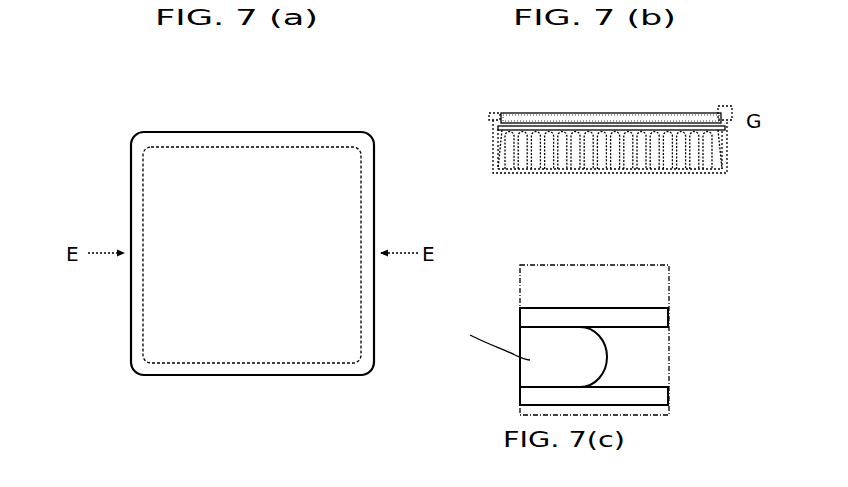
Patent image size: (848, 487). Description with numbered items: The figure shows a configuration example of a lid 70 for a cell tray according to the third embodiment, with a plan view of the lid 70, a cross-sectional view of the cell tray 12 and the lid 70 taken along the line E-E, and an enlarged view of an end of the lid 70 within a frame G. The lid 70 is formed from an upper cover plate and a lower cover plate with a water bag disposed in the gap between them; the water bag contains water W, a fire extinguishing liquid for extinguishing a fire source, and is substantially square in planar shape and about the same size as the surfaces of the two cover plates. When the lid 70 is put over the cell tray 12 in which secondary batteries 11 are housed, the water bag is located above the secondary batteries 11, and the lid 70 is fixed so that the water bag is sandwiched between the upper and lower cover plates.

The lid for a cell tray 70 is at (127, 62).
The cell tray 12 is at (743, 153).
The secondary batteries 11 is at (528, 170).